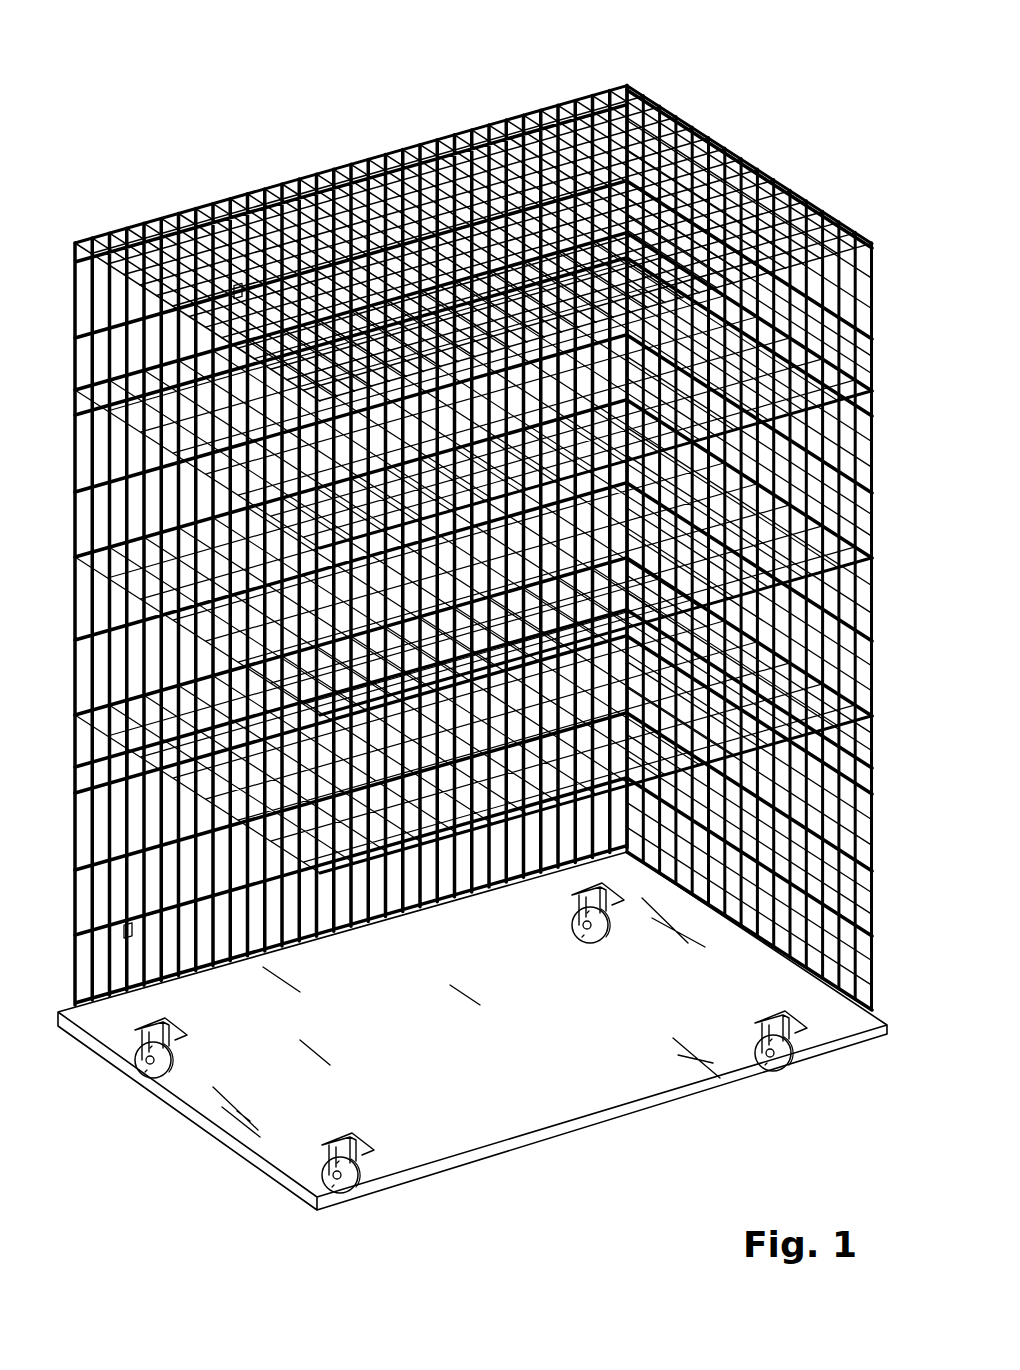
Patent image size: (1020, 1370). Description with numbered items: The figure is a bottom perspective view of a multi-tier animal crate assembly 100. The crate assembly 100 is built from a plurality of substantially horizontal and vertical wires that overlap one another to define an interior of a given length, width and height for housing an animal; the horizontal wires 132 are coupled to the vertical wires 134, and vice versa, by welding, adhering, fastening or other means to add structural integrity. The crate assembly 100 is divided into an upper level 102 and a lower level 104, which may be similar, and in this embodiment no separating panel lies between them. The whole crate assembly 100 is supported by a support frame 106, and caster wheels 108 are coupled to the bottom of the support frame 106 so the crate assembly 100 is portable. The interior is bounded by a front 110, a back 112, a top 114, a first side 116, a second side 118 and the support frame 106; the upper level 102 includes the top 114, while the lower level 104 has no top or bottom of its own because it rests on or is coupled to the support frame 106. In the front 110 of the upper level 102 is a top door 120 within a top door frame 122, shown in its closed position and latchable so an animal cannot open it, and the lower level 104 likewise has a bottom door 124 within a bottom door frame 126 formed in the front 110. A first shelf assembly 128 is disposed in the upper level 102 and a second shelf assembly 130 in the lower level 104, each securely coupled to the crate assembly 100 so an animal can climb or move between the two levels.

The animal crate assembly 100 is at (822, 110).
The upper level 102 is at (880, 374).
The lower level 104 is at (886, 920).
The support frame 106 is at (530, 1100).
The caster wheels 108 is at (782, 1078).
The front 110 is at (133, 812).
The back 112 is at (890, 641).
The top 114 is at (336, 150).
The first side 116 is at (832, 586).
The second side 118 is at (66, 524).
The top door 120 is at (238, 287).
The top door frame 122 is at (183, 458).
The bottom door 124 is at (235, 830).
The bottom door frame 126 is at (128, 930).
The first shelf assembly 128 is at (773, 320).
The second shelf assembly 130 is at (866, 840).
The horizontal wires 132 is at (133, 706).
The vertical wires 134 is at (133, 732).